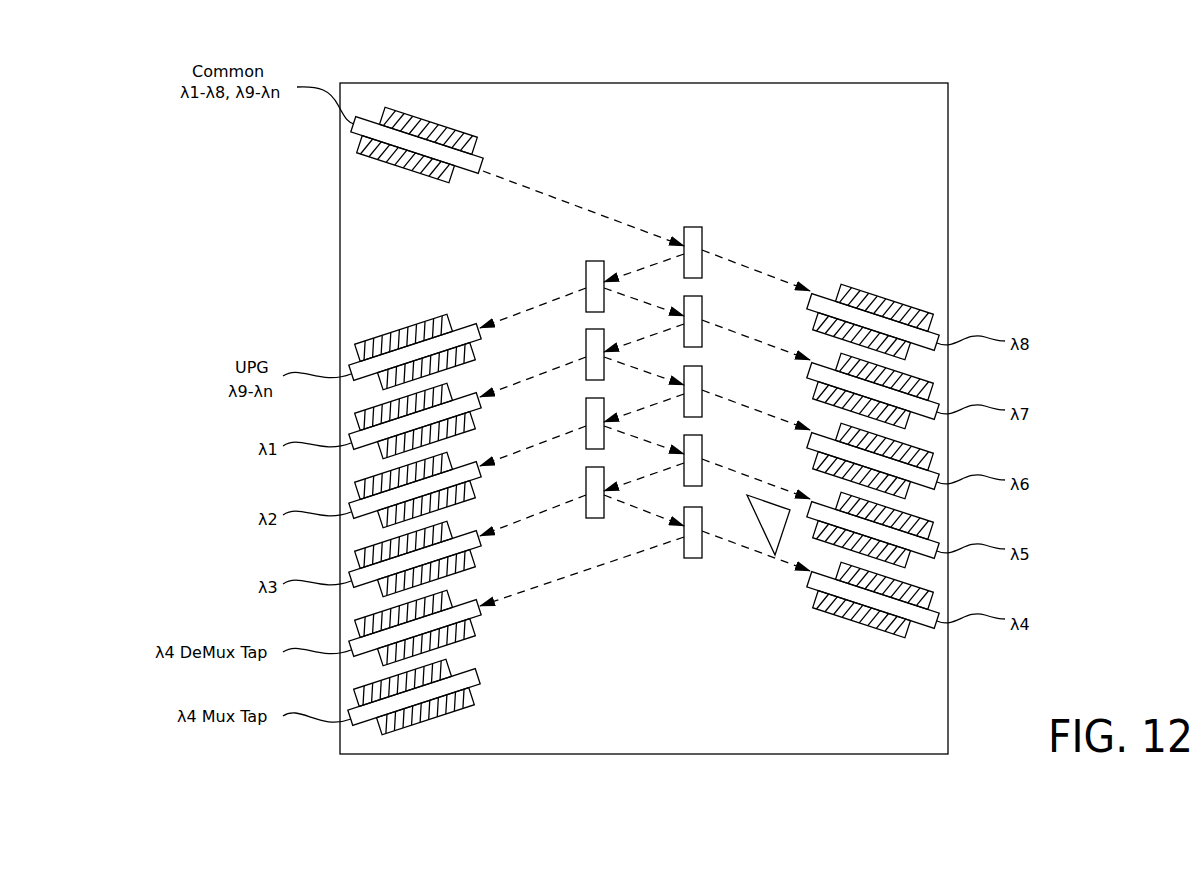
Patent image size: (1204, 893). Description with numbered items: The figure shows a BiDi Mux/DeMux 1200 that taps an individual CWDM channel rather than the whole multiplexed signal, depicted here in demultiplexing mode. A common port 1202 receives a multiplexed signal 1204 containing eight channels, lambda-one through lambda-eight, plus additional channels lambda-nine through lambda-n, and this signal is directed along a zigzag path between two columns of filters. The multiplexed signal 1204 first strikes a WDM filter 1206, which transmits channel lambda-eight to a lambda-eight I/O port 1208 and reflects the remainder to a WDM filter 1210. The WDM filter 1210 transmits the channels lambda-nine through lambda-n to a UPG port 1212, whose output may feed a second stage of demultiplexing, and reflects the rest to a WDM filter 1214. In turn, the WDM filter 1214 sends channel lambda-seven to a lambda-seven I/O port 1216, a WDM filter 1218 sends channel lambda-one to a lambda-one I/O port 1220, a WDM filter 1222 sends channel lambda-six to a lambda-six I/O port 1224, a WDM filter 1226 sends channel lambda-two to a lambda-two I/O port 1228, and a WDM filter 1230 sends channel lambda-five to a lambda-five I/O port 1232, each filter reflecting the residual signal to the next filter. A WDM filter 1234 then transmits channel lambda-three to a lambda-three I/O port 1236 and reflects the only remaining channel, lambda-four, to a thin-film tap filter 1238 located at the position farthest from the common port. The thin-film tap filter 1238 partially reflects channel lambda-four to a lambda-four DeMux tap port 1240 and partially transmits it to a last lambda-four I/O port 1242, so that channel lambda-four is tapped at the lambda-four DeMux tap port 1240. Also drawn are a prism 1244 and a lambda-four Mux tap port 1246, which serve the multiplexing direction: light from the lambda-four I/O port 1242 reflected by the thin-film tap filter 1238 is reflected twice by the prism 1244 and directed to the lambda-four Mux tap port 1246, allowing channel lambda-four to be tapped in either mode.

The BiDi Mux/DeMux 1200 is at (410, 58).
The common port 1202 is at (452, 128).
The multiplexed signal 1204 is at (524, 185).
The WDM filter 1206 is at (696, 226).
The λ8 I/O port 1208 is at (812, 292).
The WDM filter 1210 is at (586, 282).
The UPG port 1212 is at (479, 320).
The WDM filter 1214 is at (703, 313).
The λ7 I/O port 1216 is at (812, 362).
The WDM filter 1218 is at (586, 350).
The λ1 I/O port 1220 is at (479, 389).
The WDM filter 1222 is at (703, 383).
The λ6 I/O port 1224 is at (812, 432).
The WDM filter 1226 is at (586, 420).
The λ2 I/O port 1228 is at (479, 459).
The WDM filter 1230 is at (703, 451).
The λ5 I/O port 1232 is at (812, 502).
The WDM filter 1234 is at (586, 490).
The λ3 I/O port 1236 is at (479, 529).
The thin-film tap filter 1238 is at (686, 545).
The λ4 DeMux tap port 1240 is at (479, 599).
The λ4 I/O port 1242 is at (866, 629).
The prism 1244 is at (755, 538).
The λ4 Mux tap port 1246 is at (479, 668).